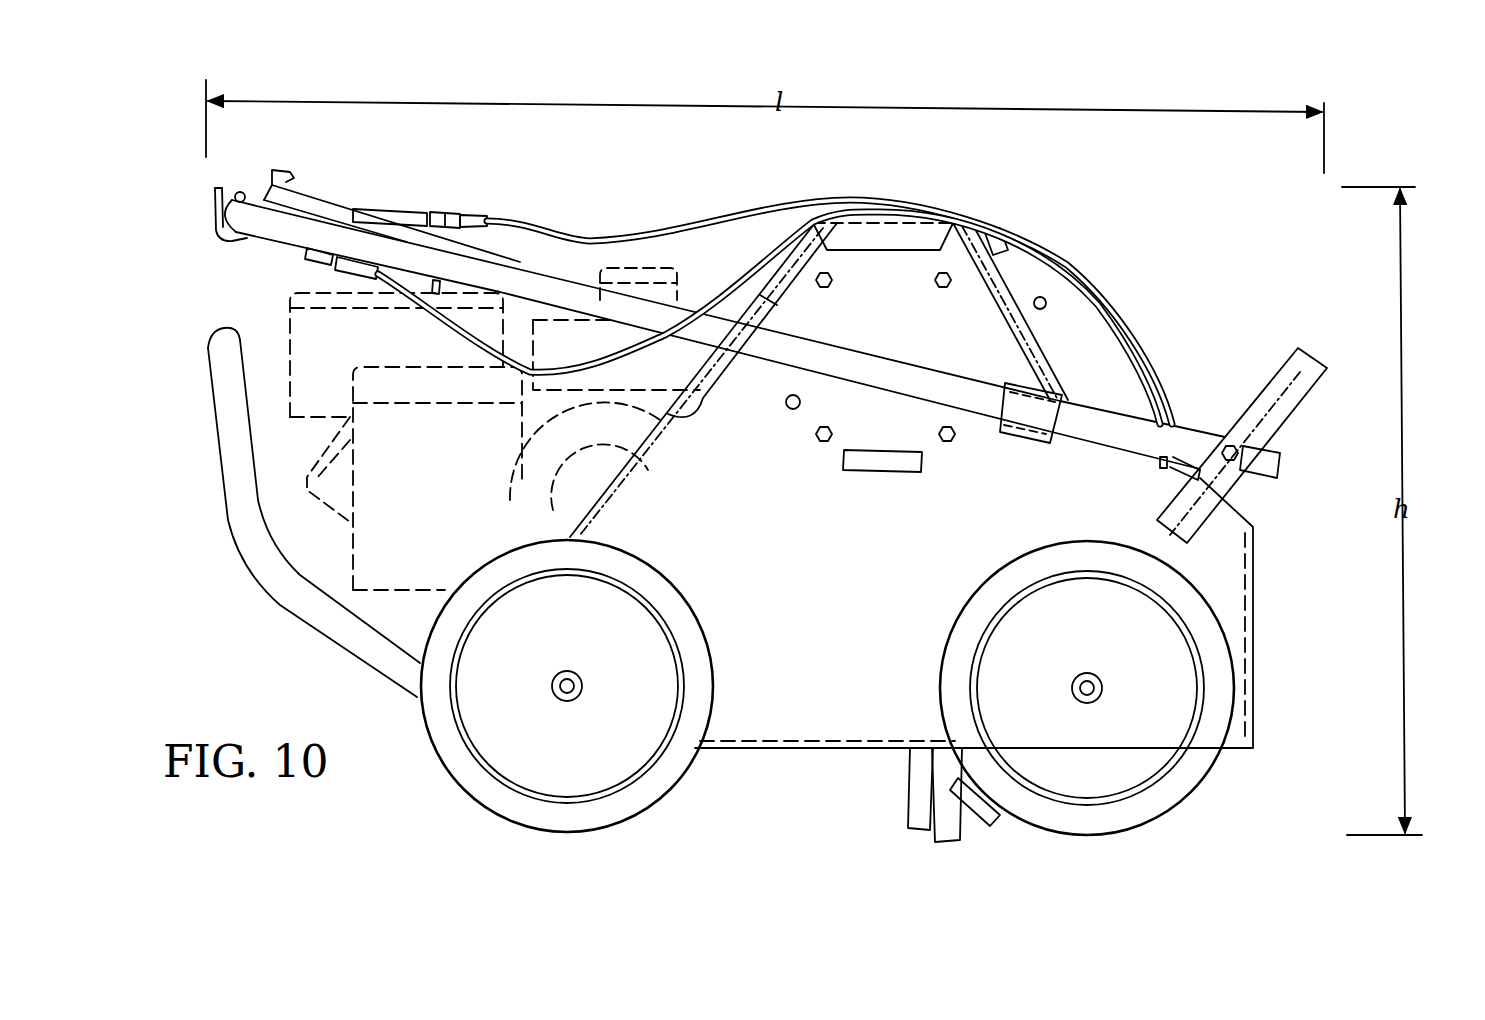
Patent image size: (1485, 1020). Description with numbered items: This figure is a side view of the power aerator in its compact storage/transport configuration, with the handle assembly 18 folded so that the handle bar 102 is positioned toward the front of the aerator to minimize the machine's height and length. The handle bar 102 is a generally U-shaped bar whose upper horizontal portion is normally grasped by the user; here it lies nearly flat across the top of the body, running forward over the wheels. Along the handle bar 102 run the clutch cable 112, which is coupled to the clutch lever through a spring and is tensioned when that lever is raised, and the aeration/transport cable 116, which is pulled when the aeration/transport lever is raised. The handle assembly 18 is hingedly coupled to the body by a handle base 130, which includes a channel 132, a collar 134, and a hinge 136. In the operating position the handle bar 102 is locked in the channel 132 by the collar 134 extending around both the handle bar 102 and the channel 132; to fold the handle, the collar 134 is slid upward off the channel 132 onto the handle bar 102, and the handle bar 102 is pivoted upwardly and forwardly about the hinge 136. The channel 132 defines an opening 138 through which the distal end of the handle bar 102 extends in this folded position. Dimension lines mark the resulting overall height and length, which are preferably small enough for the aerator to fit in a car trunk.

The handle assembly 18 is at (240, 256).
The handle bar 102 is at (765, 350).
The clutch cable 112 is at (681, 227).
The aeration/transport cable 116 is at (906, 205).
The handle base 130 is at (1275, 413).
The channel 132 is at (1318, 388).
The collar 134 is at (1040, 437).
The hinge 136 is at (1243, 470).
The opening 138 is at (1281, 428).